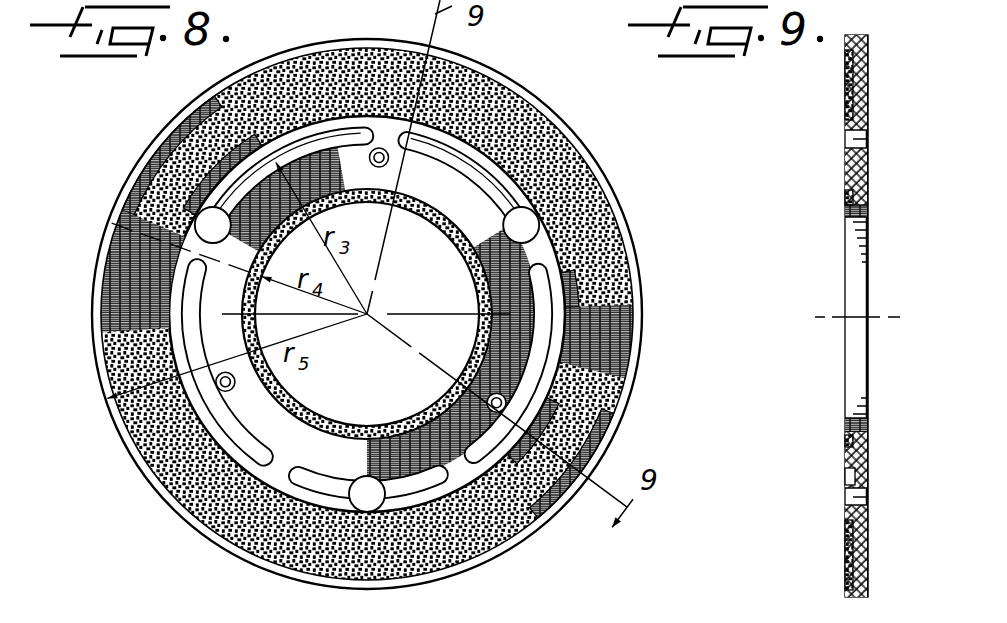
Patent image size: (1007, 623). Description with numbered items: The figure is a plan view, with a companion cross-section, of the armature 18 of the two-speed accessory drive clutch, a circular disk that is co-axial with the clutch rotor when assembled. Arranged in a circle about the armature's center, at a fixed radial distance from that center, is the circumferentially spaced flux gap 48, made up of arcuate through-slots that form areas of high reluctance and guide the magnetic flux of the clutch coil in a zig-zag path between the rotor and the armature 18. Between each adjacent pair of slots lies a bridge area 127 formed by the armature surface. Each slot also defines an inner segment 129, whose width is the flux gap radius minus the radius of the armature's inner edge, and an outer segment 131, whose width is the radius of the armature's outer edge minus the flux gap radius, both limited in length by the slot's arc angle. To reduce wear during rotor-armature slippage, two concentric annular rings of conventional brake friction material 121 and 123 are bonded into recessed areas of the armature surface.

In FIG. 8, the armature 18 is at (562, 128).
In FIG. 8, the flux gap 48 is at (322, 122).
In FIG. 9, the flux gap 48 is at (866, 139).
In FIG. 8, the brake friction material 121 is at (485, 97).
In FIG. 9, the brake friction material 121 is at (845, 538).
In FIG. 8, the brake friction material 123 is at (457, 242).
In FIG. 9, the brake friction material 123 is at (845, 440).
In FIG. 8, the bridge area 127 is at (283, 477).
In FIG. 8, the inner segment 129 is at (226, 347).
In FIG. 8, the outer segment 131 is at (130, 349).